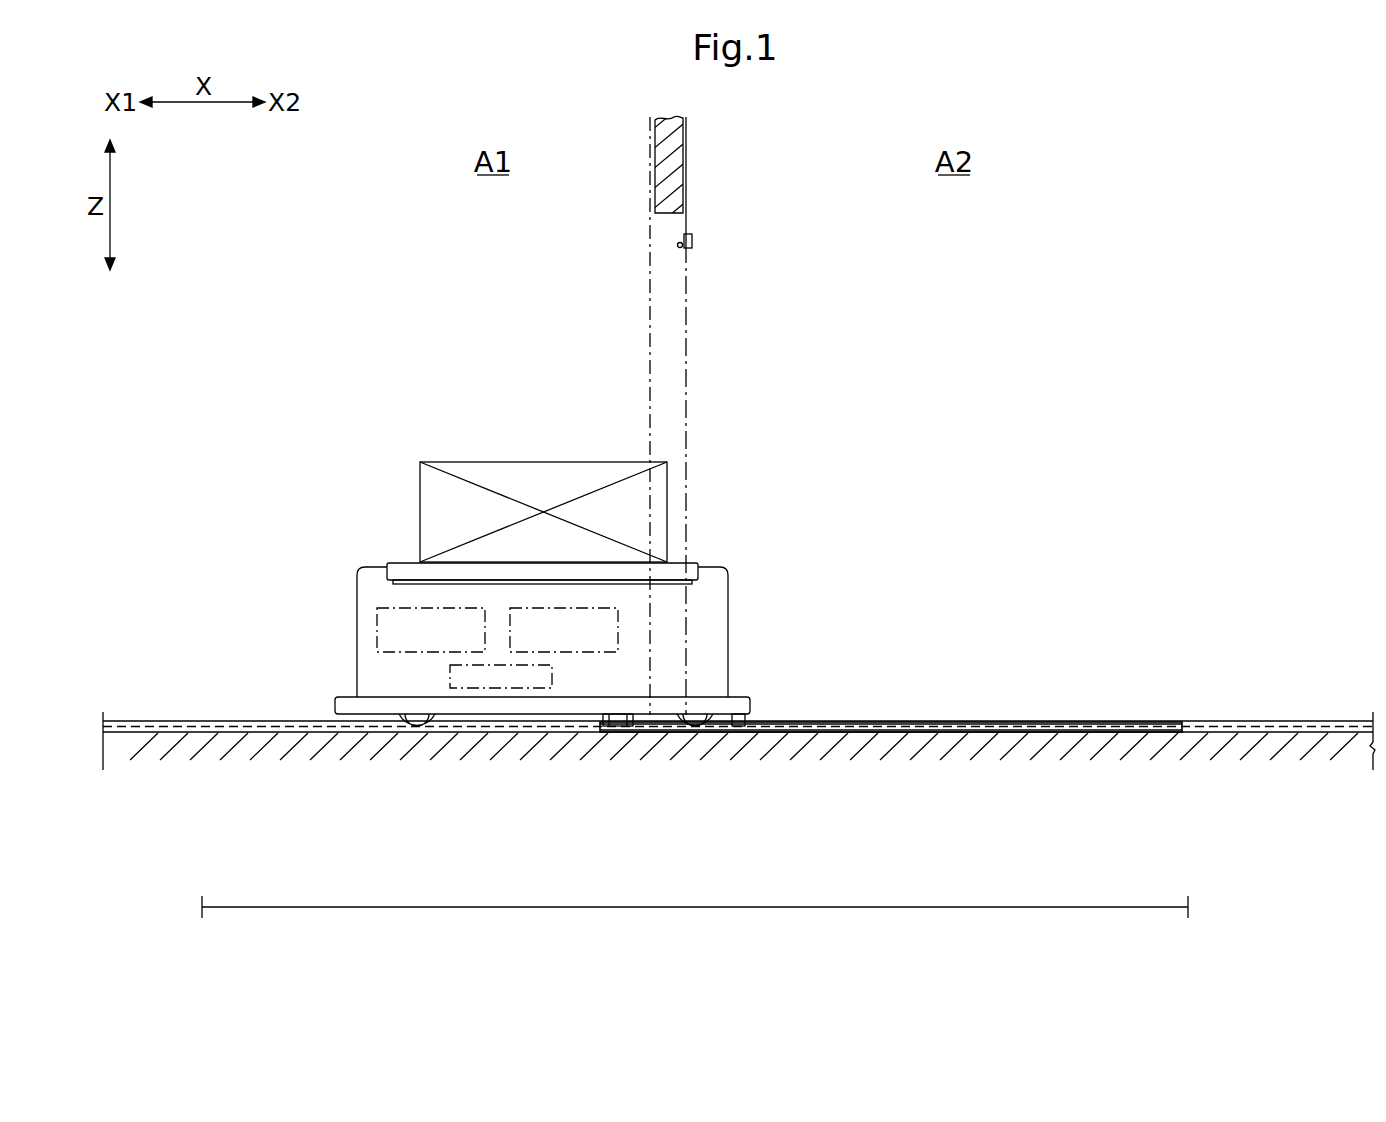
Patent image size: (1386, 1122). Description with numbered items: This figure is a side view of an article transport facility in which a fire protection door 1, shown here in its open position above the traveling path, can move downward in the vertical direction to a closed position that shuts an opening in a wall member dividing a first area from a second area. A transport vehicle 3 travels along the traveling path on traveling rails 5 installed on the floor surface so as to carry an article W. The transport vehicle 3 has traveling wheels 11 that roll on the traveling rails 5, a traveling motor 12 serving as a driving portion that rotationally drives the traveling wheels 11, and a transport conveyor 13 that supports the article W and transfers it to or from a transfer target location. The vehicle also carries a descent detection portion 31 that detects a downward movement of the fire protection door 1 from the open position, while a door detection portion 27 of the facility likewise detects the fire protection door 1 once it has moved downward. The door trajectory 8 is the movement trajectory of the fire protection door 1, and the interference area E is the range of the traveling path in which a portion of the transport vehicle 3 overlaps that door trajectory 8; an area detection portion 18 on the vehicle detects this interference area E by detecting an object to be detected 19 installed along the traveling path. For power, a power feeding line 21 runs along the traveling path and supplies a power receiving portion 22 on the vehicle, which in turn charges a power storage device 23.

The fire protection door 1 is at (683, 165).
The transport vehicle 3 is at (552, 650).
The traveling rails 5 is at (1090, 722).
The door trajectory 8 is at (686, 365).
The traveling wheels 11 is at (410, 728).
The traveling motor 12 is at (450, 676).
The transport conveyor 13 is at (402, 550).
The area detection portion 18 is at (745, 720).
The object to be detected 19 is at (1020, 735).
The power feeding line 21 is at (1290, 722).
The power receiving portion 22 is at (622, 728).
The power storage device 23 is at (565, 652).
The door detection portion 27 is at (692, 239).
The descent detection portion 31 is at (377, 628).
The article W is at (518, 462).
The interference area E is at (695, 894).